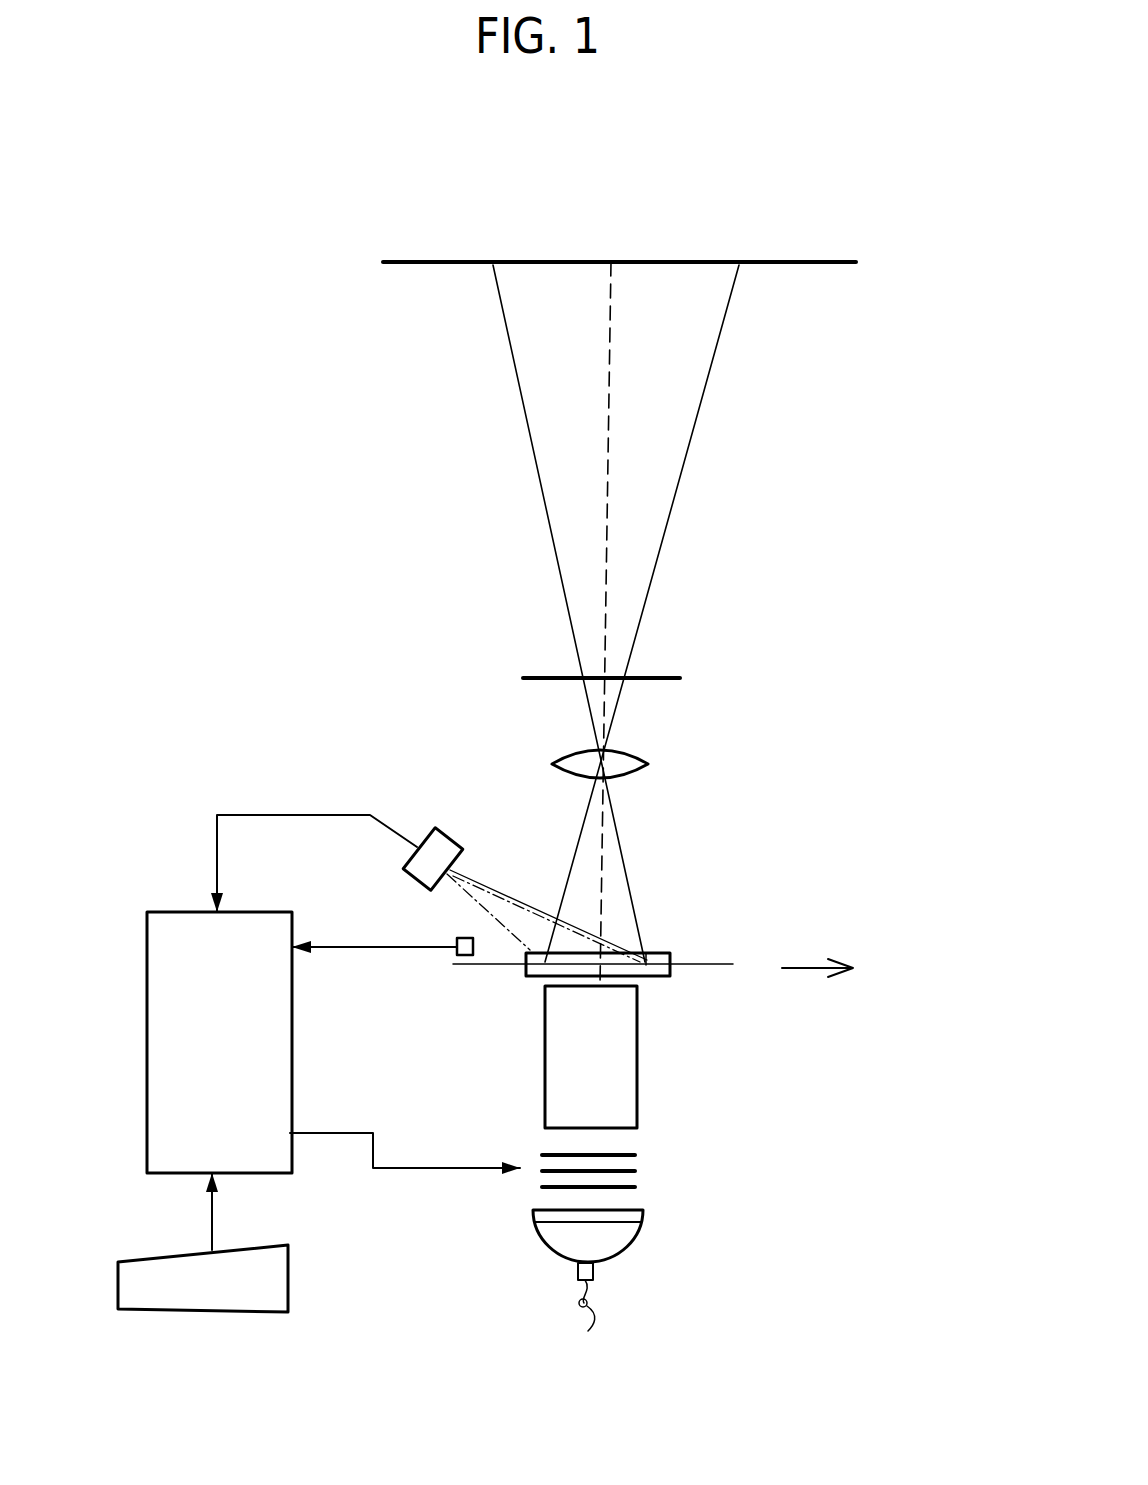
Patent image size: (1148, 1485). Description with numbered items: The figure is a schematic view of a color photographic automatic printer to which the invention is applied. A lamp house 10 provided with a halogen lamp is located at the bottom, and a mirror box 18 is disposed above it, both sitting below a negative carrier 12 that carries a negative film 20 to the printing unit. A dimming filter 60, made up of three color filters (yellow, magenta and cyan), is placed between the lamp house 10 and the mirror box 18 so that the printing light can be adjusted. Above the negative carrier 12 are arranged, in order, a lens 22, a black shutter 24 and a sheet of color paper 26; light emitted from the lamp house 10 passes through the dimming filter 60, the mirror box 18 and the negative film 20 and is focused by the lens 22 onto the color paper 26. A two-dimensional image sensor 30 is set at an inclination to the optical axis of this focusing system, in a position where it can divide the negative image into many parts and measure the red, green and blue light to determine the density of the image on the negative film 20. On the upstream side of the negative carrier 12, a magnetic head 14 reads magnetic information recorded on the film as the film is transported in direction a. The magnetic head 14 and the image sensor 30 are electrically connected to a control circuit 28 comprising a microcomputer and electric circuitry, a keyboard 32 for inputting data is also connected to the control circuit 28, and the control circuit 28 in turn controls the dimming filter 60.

The lamp house 10 is at (633, 1240).
The negative carrier 12 is at (660, 978).
The magnetic head 14 is at (457, 942).
The mirror box 18 is at (637, 1065).
The negative film 20 is at (660, 955).
The lens 22 is at (643, 762).
The black shutter 24 is at (665, 680).
The color paper 26 is at (773, 266).
The control circuit 28 is at (272, 1028).
The two-dimensional image sensor 30 is at (455, 837).
The keyboard 32 is at (273, 1275).
The dimming filter 60 is at (642, 1171).
The slide movement direction a is at (810, 967).